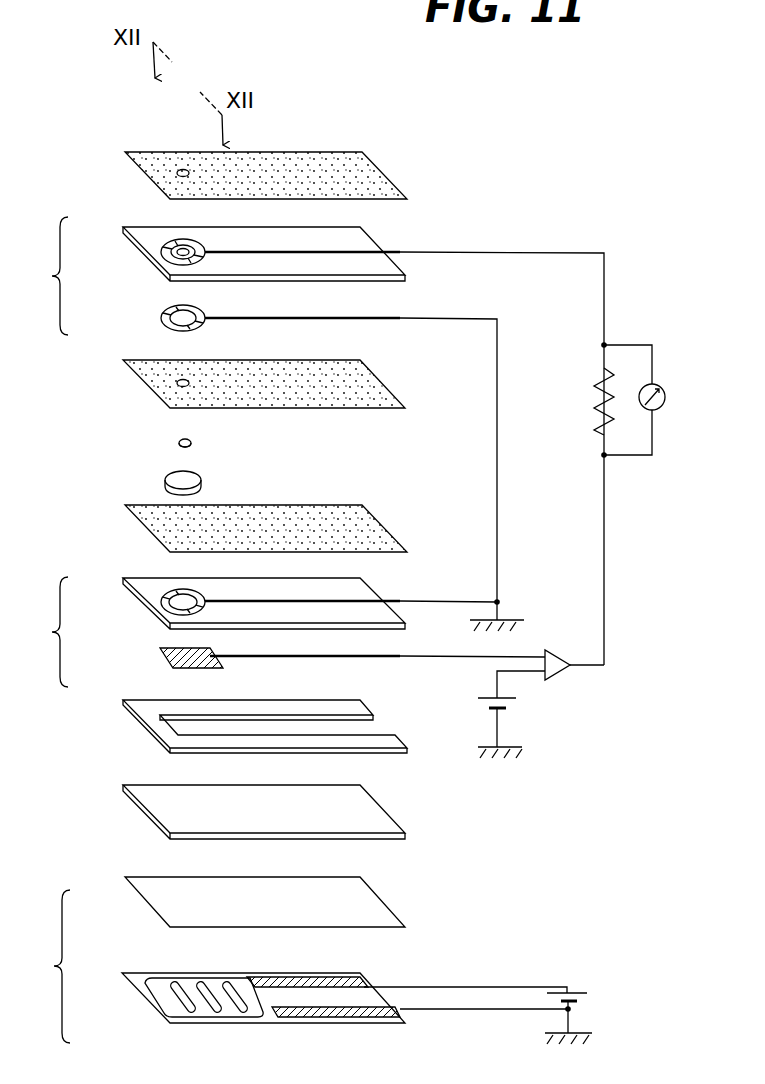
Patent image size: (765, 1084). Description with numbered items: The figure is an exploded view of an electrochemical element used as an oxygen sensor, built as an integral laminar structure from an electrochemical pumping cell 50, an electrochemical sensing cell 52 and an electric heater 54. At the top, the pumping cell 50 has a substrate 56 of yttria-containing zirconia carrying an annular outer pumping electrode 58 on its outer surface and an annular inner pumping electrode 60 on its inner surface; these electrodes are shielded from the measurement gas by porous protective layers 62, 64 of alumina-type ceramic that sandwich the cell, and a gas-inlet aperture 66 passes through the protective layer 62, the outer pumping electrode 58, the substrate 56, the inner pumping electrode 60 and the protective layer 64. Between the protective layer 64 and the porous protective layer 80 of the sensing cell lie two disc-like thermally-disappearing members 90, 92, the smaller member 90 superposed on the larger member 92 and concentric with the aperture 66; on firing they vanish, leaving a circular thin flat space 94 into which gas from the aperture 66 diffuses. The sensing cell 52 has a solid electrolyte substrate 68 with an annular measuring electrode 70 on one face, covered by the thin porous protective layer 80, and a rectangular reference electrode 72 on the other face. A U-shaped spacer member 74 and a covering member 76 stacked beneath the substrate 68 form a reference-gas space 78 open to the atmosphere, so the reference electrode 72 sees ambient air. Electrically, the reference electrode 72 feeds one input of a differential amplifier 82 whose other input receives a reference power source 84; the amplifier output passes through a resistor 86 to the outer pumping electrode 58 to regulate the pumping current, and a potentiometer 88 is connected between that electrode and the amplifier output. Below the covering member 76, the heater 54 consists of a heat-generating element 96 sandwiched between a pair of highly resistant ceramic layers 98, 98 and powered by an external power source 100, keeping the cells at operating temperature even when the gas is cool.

The electrochemical pumping cell 50 is at (315, 441).
The electrochemical sensing cell 52 is at (281, 632).
The electric heater 54 is at (296, 960).
The substrate 56 is at (165, 268).
The outer pumping electrode 58 is at (163, 250).
The inner pumping electrode 60 is at (163, 318).
The porous protective layer 62 is at (375, 170).
The porous protective layer 64 is at (375, 382).
The gas-inlet aperture 66 is at (183, 169).
The substrate 68 is at (152, 615).
The measuring electrode 70 is at (163, 600).
The reference electrode 72 is at (162, 658).
The U-shaped spacer member 74 is at (152, 720).
The covering member 76 is at (148, 800).
The reference-gas space 78 is at (362, 726).
The porous protective layer 80 is at (365, 522).
The differential amplifier 82 is at (553, 660).
The reference power source 84 is at (517, 706).
The resistor 86 is at (595, 402).
The potentiometer 88 is at (656, 412).
The thermally-disappearing member 90 is at (180, 443).
The thermally-disappearing member 92 is at (168, 482).
The flat space 94 is at (130, 462).
The heat-generating element 96 is at (142, 995).
The ceramic layer 98 is at (152, 897).
The external power source 100 is at (580, 990).